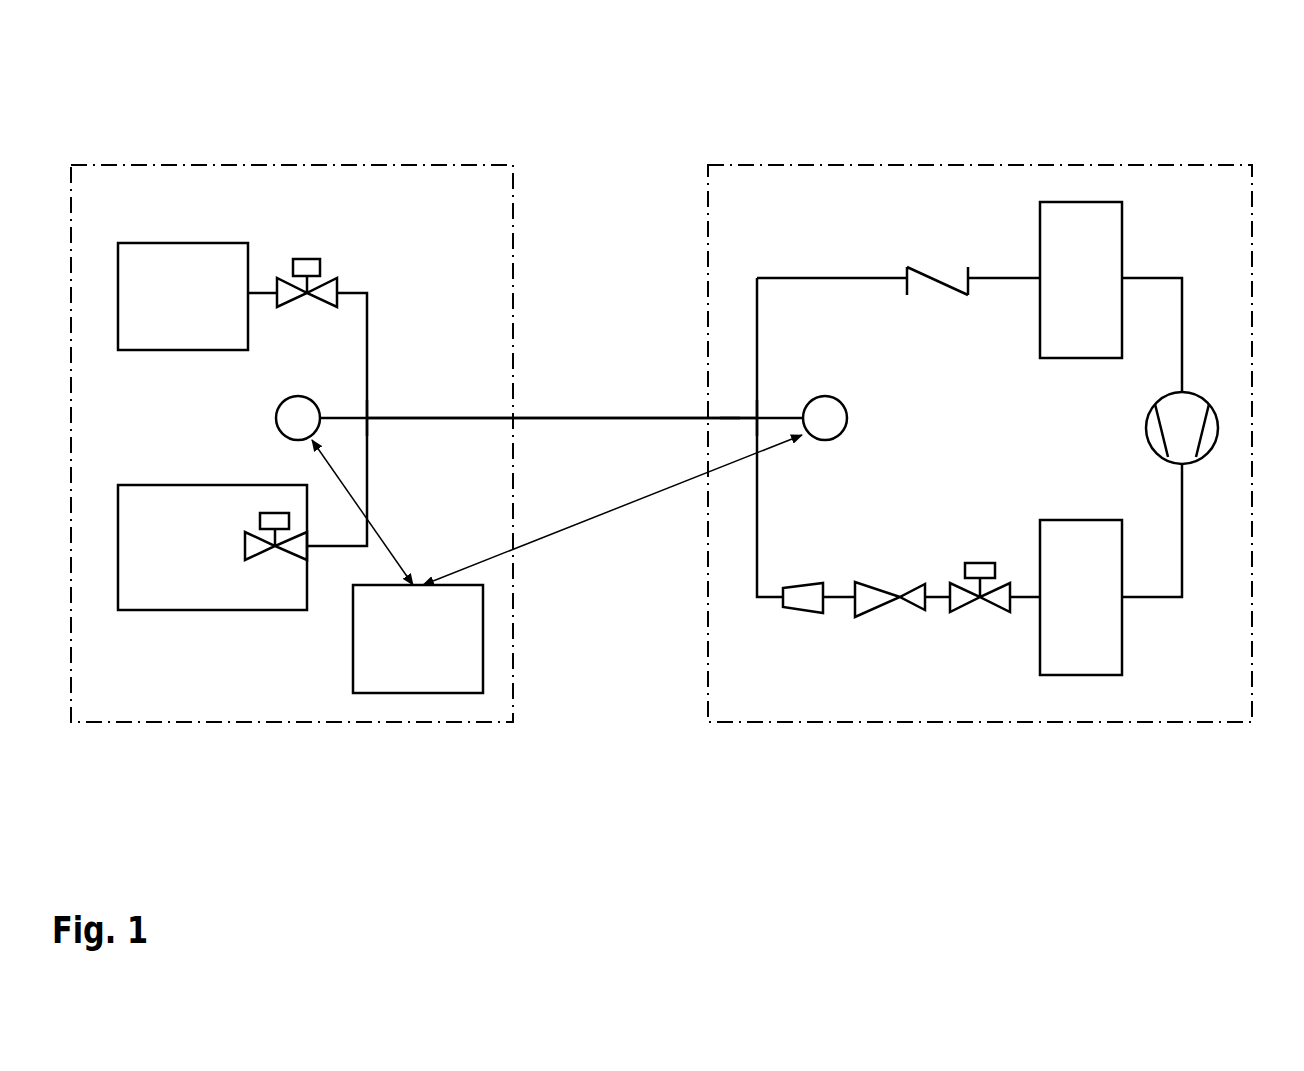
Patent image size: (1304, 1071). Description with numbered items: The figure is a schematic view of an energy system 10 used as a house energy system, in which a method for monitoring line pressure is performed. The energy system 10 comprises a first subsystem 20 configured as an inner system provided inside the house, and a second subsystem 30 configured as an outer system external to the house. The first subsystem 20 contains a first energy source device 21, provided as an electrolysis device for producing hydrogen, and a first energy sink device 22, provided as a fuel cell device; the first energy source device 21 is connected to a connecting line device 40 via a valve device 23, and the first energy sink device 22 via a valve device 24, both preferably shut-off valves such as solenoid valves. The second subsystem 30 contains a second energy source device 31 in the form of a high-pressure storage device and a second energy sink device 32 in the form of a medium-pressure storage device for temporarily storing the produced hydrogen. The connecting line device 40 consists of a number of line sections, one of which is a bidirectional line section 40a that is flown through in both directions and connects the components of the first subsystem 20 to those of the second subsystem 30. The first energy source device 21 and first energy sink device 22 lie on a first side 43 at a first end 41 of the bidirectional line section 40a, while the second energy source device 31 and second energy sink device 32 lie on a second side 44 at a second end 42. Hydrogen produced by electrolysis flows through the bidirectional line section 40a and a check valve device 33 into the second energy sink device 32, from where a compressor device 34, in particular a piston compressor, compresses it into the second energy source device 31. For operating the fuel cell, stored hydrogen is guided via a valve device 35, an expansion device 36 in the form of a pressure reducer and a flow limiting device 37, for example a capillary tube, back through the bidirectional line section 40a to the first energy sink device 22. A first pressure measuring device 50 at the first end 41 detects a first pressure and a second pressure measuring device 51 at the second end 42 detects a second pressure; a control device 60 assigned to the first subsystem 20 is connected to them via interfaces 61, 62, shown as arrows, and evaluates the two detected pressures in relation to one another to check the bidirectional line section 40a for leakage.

The energy system 10 is at (598, 88).
The first subsystem 20 is at (256, 162).
The first energy source device 21 is at (168, 310).
The first energy sink device 22 is at (163, 561).
The valve device 23 is at (309, 259).
The valve device 24 is at (270, 520).
The second subsystem 30 is at (925, 162).
The second energy source device 31 is at (1066, 610).
The second energy sink device 32 is at (1066, 293).
The check valve device 33 is at (925, 290).
The compressor device 34 is at (1145, 431).
The valve device 35 is at (979, 562).
The expansion device 36 is at (890, 585).
The flow limiting device 37 is at (807, 583).
The connecting line device 40 is at (745, 372).
The bidirectional line section 40a is at (597, 422).
The first end 41 is at (368, 422).
The second end 42 is at (760, 415).
The first side 43 is at (378, 412).
The second side 44 is at (745, 413).
The first pressure measuring device 50 is at (274, 418).
The second pressure measuring device 51 is at (848, 418).
The control device 60 is at (398, 650).
The interface 61 is at (388, 543).
The interface 62 is at (624, 508).